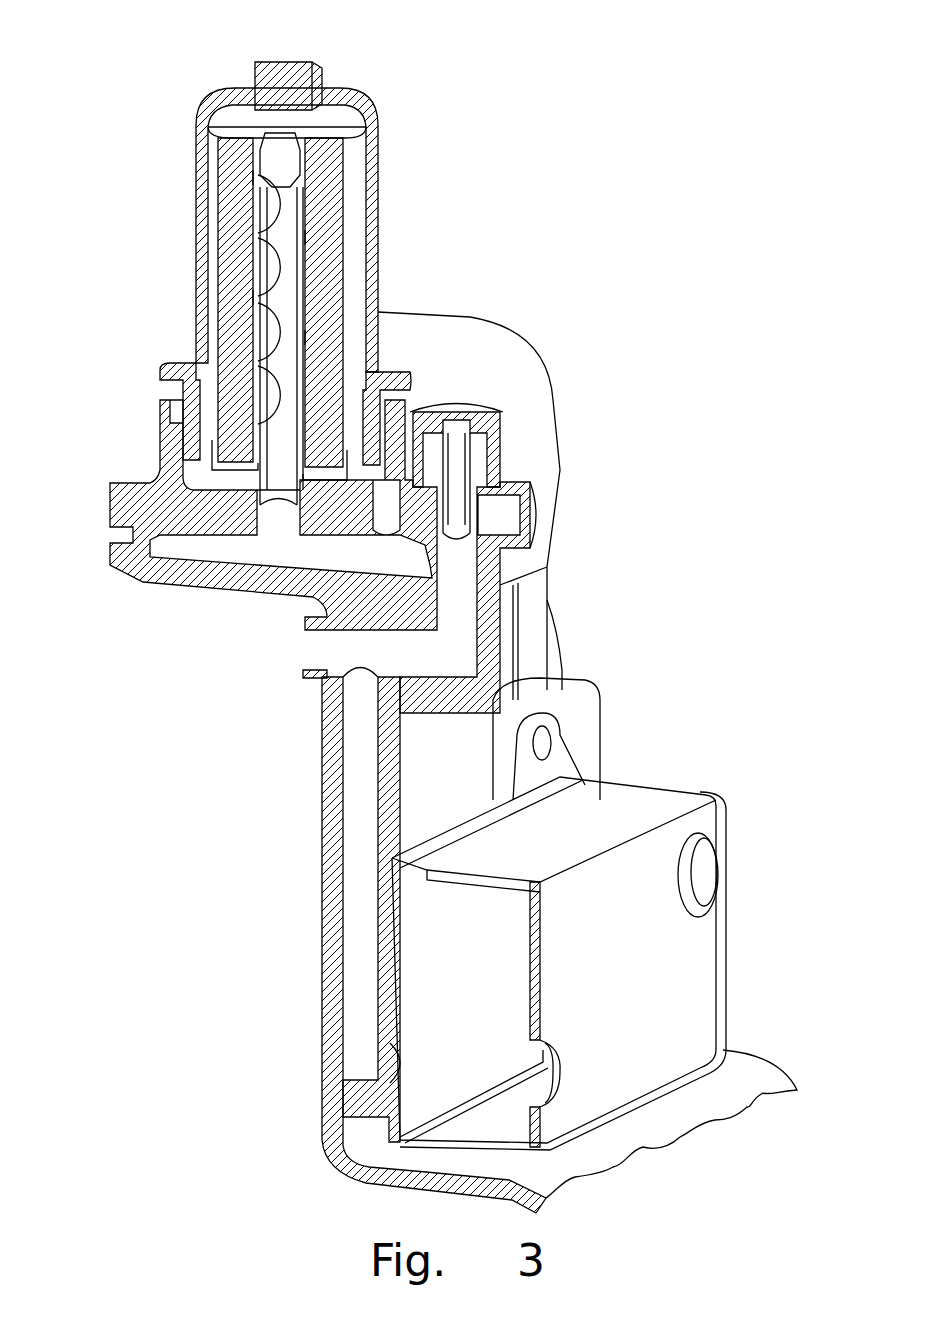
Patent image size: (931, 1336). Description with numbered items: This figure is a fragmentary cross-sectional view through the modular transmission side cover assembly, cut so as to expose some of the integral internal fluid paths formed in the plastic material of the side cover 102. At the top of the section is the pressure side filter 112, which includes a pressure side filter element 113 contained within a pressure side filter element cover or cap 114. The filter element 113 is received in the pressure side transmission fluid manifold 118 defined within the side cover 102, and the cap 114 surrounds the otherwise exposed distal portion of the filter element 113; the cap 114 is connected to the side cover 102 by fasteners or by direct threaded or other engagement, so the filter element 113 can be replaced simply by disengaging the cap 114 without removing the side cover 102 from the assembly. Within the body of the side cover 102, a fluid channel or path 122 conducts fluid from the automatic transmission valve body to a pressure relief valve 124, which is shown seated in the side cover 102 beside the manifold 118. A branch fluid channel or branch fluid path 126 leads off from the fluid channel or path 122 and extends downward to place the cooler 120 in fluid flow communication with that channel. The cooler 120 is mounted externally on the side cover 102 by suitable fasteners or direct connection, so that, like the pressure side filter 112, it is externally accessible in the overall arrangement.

The pressure side filter 112 is at (291, 255).
The pressure side filter element cover or cap 114 is at (370, 178).
The pressure side filter element 113 is at (327, 267).
The pressure relief valve 124 is at (480, 490).
The pressure side transmission fluid manifold 118 is at (177, 560).
The fluid channel or path 122 is at (318, 650).
The side cover 102 is at (588, 687).
The cooler 120 is at (703, 822).
The branch fluid channel or branch fluid path 126 is at (353, 1003).